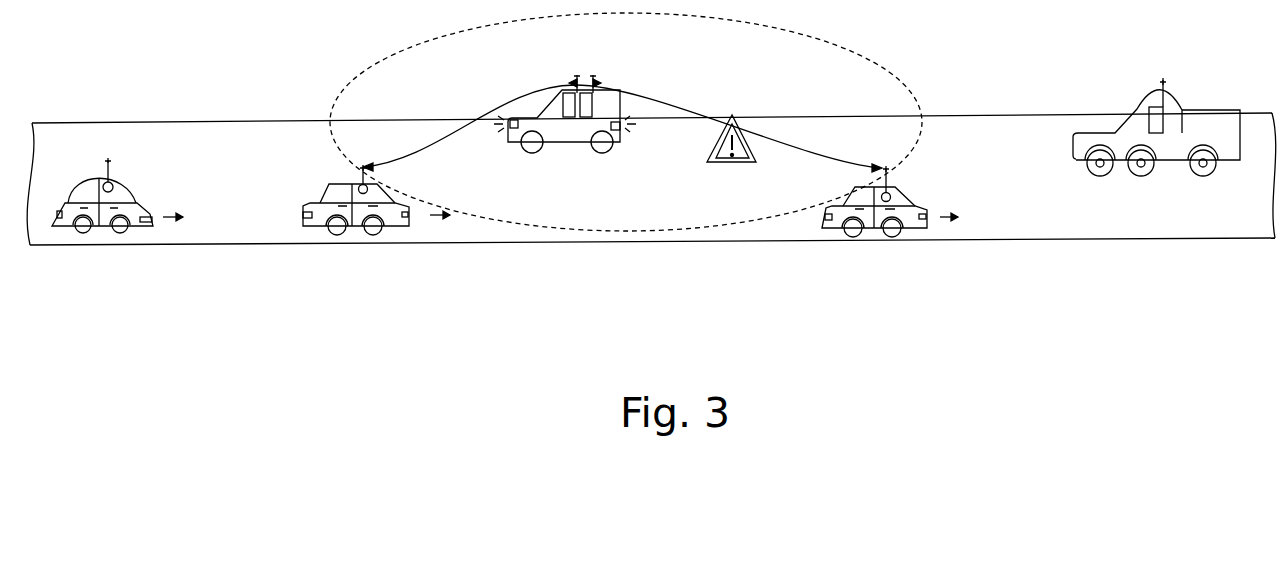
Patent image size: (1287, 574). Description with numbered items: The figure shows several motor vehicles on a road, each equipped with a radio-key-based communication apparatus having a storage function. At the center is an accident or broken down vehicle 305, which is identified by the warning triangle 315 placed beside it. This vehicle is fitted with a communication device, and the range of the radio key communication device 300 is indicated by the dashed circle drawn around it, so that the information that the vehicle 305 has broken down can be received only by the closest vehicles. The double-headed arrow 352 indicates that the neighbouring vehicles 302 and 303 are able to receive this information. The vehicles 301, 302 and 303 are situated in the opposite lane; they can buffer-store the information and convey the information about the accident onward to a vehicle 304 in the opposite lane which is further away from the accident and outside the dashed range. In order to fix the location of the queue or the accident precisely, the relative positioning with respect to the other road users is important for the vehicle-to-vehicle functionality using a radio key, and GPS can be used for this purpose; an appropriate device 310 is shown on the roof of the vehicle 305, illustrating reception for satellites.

The radio key communication device 300 is at (574, 84).
The vehicle 301 is at (135, 225).
The vehicle 302 is at (355, 227).
The vehicle 303 is at (883, 230).
The vehicle 304 is at (1210, 107).
The accident or broken down vehicle 305 is at (603, 98).
The device 310 is at (581, 77).
The warning triangle 315 is at (709, 163).
The double-headed arrow 352 is at (622, 128).